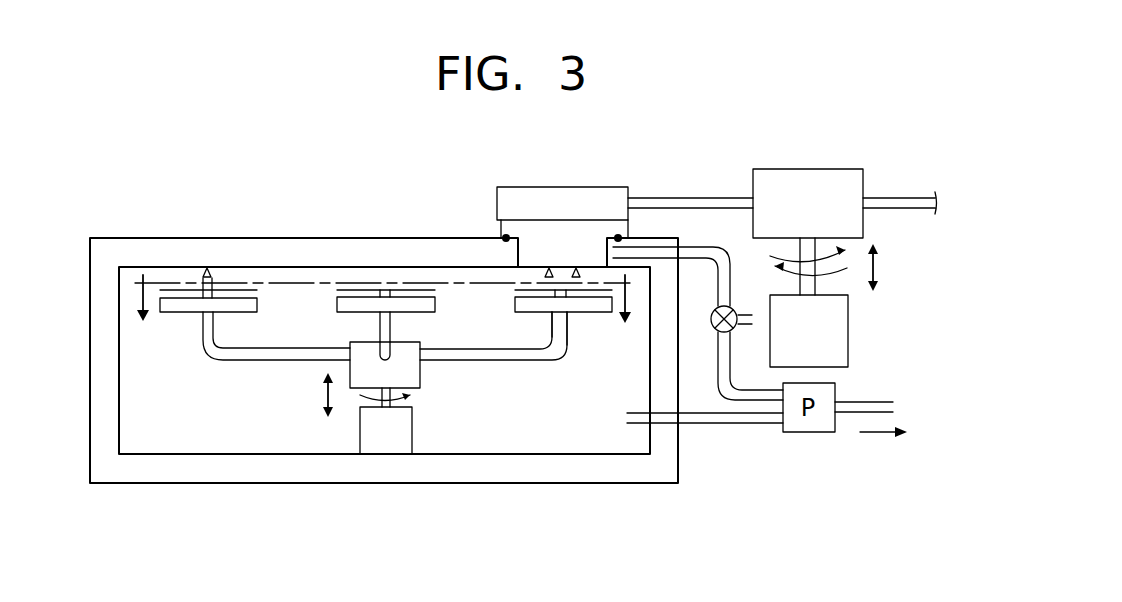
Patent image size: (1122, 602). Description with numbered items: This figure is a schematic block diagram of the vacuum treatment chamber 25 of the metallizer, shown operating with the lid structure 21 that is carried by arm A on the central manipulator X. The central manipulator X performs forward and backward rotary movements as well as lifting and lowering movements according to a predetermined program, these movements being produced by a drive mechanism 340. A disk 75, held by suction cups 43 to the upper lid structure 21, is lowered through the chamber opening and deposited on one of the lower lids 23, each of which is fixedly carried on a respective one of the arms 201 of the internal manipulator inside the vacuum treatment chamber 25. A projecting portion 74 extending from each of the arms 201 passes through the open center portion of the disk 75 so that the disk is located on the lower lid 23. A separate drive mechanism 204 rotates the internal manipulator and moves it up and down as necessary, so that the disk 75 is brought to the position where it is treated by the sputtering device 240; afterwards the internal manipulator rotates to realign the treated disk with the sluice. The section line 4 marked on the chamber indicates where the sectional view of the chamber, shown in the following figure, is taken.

The vacuum treatment chamber 25 is at (577, 477).
The lower lid 23 is at (177, 300).
The disk 75 is at (240, 288).
The sputtering device 240 is at (213, 268).
The suction cups 43 is at (576, 267).
The lid structure 21 is at (518, 232).
The manipulator arm A is at (672, 197).
The central manipulator X is at (848, 178).
The drive mechanism 340 is at (838, 332).
The projecting portion 74 is at (563, 293).
The arm of the internal manipulator 201 is at (247, 357).
The drive mechanism 204 is at (365, 435).
The section line IV-IV 4 is at (387, 317).